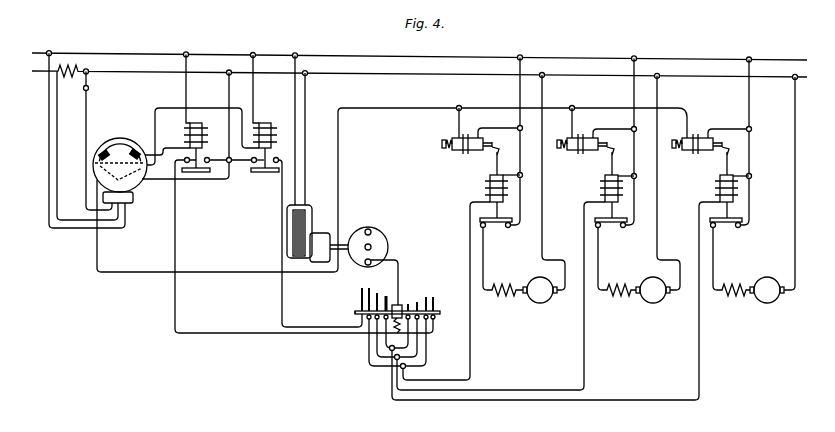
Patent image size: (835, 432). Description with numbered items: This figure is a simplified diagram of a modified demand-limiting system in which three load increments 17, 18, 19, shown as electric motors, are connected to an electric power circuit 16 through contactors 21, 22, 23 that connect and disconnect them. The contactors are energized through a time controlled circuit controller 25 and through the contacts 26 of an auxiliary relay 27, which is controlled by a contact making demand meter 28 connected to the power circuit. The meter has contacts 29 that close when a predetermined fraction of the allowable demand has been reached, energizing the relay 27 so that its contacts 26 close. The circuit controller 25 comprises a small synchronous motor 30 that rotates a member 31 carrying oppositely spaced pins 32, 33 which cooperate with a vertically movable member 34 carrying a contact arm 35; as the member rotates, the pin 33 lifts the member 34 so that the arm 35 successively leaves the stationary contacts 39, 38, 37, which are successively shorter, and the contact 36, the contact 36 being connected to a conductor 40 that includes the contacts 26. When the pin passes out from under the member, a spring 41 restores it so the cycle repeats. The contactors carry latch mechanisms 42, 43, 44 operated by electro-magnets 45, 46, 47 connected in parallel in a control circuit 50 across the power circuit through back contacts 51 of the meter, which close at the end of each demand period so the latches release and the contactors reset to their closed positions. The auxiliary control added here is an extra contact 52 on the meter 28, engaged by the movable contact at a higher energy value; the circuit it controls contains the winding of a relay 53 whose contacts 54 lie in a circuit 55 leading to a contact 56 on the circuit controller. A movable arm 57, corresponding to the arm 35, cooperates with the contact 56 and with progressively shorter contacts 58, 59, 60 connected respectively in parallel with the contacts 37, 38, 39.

The electric power circuit 16 is at (328, 72).
The load increment 17 is at (540, 303).
The load increment 18 is at (653, 303).
The load increment 19 is at (767, 303).
The contactor 21 is at (488, 183).
The contactor 22 is at (603, 184).
The contactor 23 is at (718, 184).
The time controlled circuit controller 25 is at (365, 326).
The contacts 26 is at (206, 158).
The auxiliary relay 27 is at (208, 118).
The contact making demand meter 28 is at (139, 187).
The contacts 29 is at (118, 149).
The synchronous motor 30 is at (313, 216).
The member 31 is at (388, 243).
The pin 32 is at (371, 231).
The pin 33 is at (366, 266).
The vertically movable member 34 is at (400, 276).
The contact arm 35 is at (441, 312).
The stationary contact 36 is at (436, 300).
The stationary contact 37 is at (427, 297).
The stationary contact 38 is at (418, 300).
The stationary contact 39 is at (408, 303).
The conductor 40 is at (228, 335).
The spring 41 is at (432, 327).
The latch mechanism 42 is at (500, 151).
The latch mechanism 43 is at (615, 151).
The latch mechanism 44 is at (730, 151).
The electro-magnet 45 is at (462, 152).
The electro-magnet 46 is at (577, 152).
The electro-magnet 47 is at (692, 152).
The control circuit 50 is at (338, 155).
The back contacts 51 is at (103, 150).
The extra contact 52 is at (134, 149).
The relay 53 is at (270, 131).
The contacts 54 is at (252, 172).
The circuit 55 is at (281, 292).
The contact 56 is at (361, 292).
The movable arm 57 is at (357, 313).
The contact 58 is at (368, 298).
The contact 59 is at (376, 304).
The contact 60 is at (386, 295).